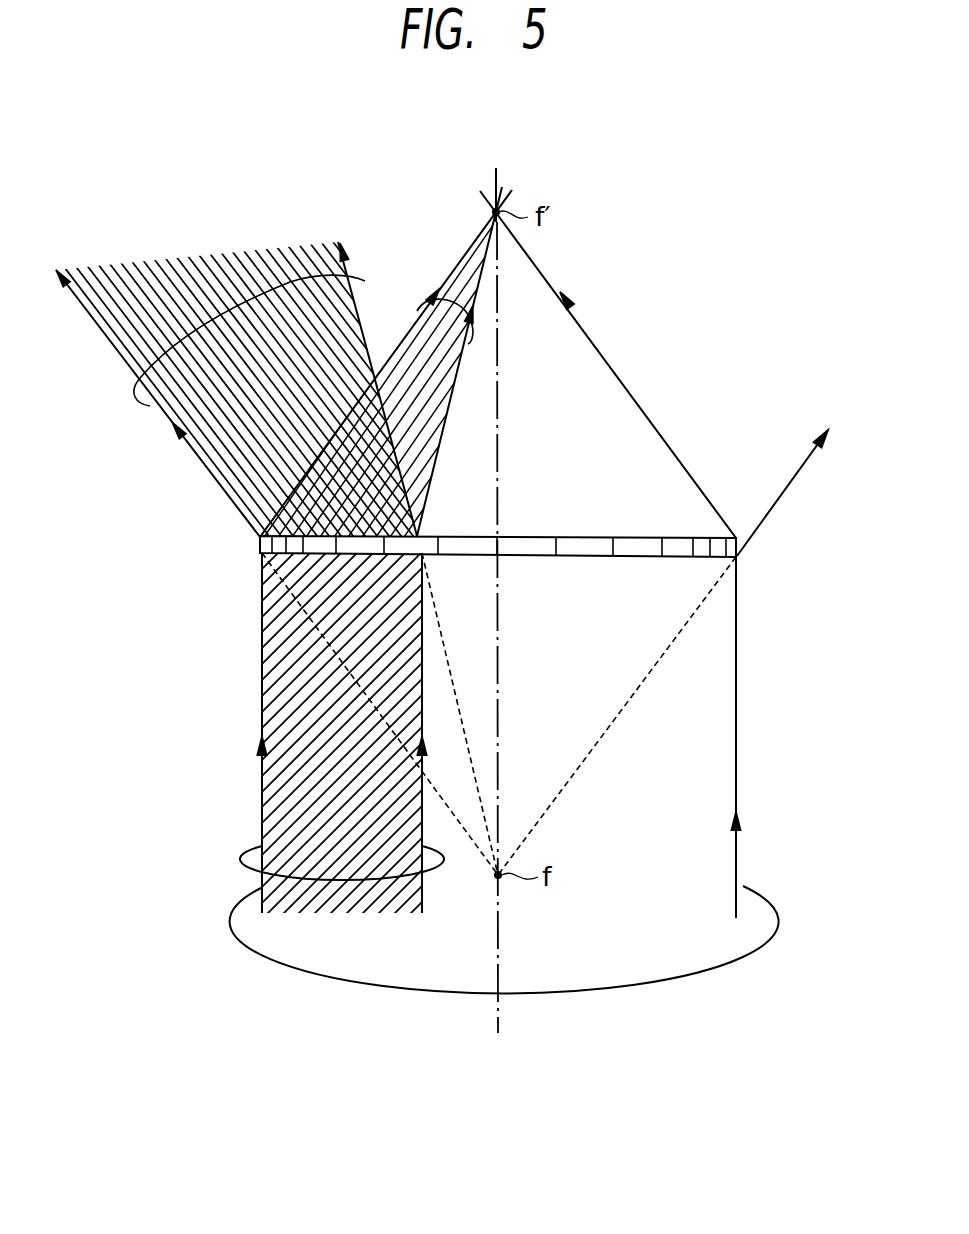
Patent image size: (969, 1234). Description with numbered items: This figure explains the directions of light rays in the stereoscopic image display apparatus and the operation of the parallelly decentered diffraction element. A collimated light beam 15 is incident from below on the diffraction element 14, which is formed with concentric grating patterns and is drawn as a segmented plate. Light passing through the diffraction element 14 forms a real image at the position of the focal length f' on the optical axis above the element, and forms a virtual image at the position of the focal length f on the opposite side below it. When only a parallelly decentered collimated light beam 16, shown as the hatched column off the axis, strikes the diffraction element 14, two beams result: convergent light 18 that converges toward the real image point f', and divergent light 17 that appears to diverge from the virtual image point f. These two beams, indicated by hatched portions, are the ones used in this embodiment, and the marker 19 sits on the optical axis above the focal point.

The diffraction element 14 is at (265, 543).
The collimated light beam 15 is at (250, 947).
The parallelly decentered collimated light beam 16 is at (245, 853).
The divergent light 17 is at (360, 307).
The convergent light 18 is at (416, 311).
The optical axis at focal point f' 19 is at (495, 181).